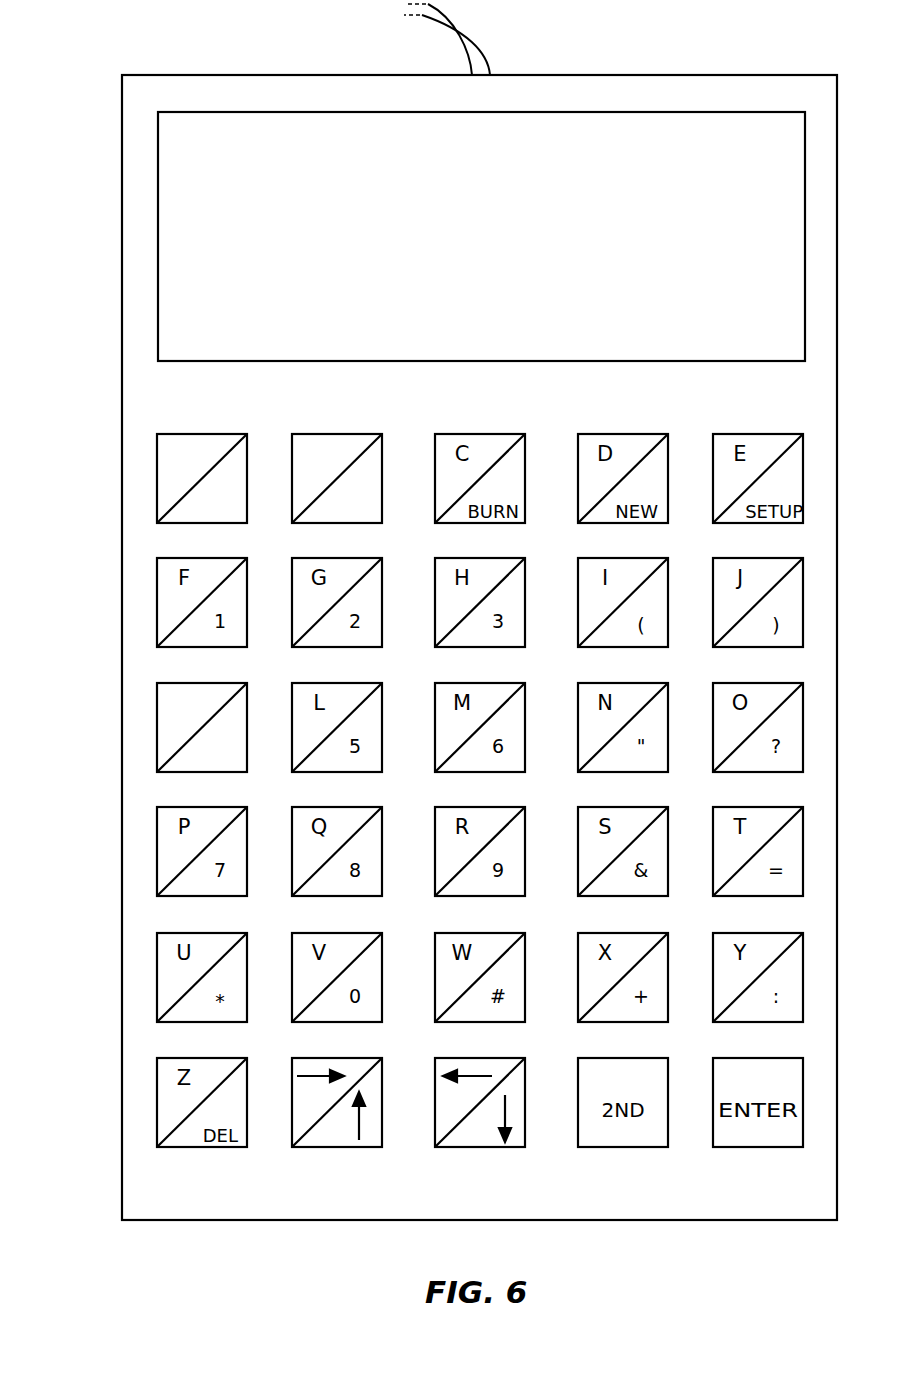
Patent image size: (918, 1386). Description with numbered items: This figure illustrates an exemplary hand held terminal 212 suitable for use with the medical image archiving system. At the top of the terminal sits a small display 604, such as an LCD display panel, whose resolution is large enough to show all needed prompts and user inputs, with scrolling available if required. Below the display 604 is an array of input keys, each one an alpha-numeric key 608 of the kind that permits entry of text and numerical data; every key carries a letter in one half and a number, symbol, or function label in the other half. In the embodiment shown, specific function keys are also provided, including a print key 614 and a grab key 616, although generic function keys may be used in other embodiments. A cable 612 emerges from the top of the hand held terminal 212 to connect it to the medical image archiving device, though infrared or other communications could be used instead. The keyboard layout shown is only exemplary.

The hand held terminal 212 is at (188, 1277).
The display 604 is at (170, 273).
The alpha-numeric key 608 is at (160, 735).
The cable 612 is at (470, 40).
The print key 614 is at (372, 467).
The grab key 616 is at (176, 520).